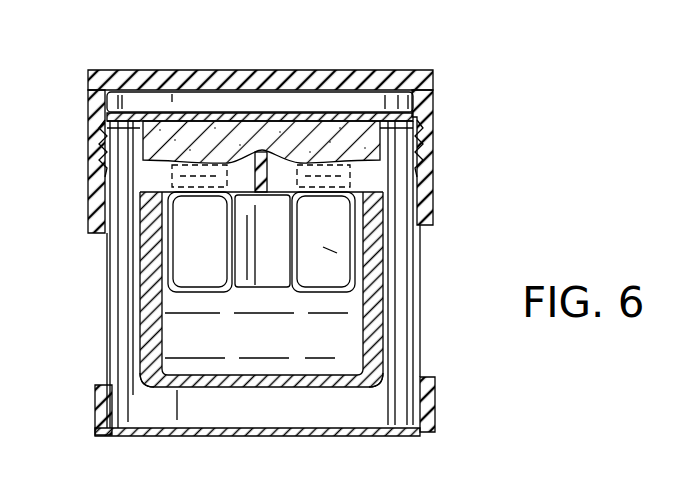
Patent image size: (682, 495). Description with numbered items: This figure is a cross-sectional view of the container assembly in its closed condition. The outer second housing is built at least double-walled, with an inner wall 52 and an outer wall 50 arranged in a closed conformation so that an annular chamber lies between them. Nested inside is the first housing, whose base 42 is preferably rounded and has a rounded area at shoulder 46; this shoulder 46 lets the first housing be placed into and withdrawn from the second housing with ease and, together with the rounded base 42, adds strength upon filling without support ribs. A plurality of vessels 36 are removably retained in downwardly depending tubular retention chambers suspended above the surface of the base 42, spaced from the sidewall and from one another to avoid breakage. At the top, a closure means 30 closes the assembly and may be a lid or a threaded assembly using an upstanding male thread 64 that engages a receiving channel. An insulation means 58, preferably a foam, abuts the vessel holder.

The closure means 30 is at (266, 73).
The vessels 36 is at (362, 257).
The base 42 is at (257, 377).
The shoulder 46 is at (157, 381).
The outer wall 50 is at (420, 300).
The inner wall 52 is at (386, 336).
The insulation means 58 is at (88, 143).
The upstanding male thread 64 is at (433, 140).